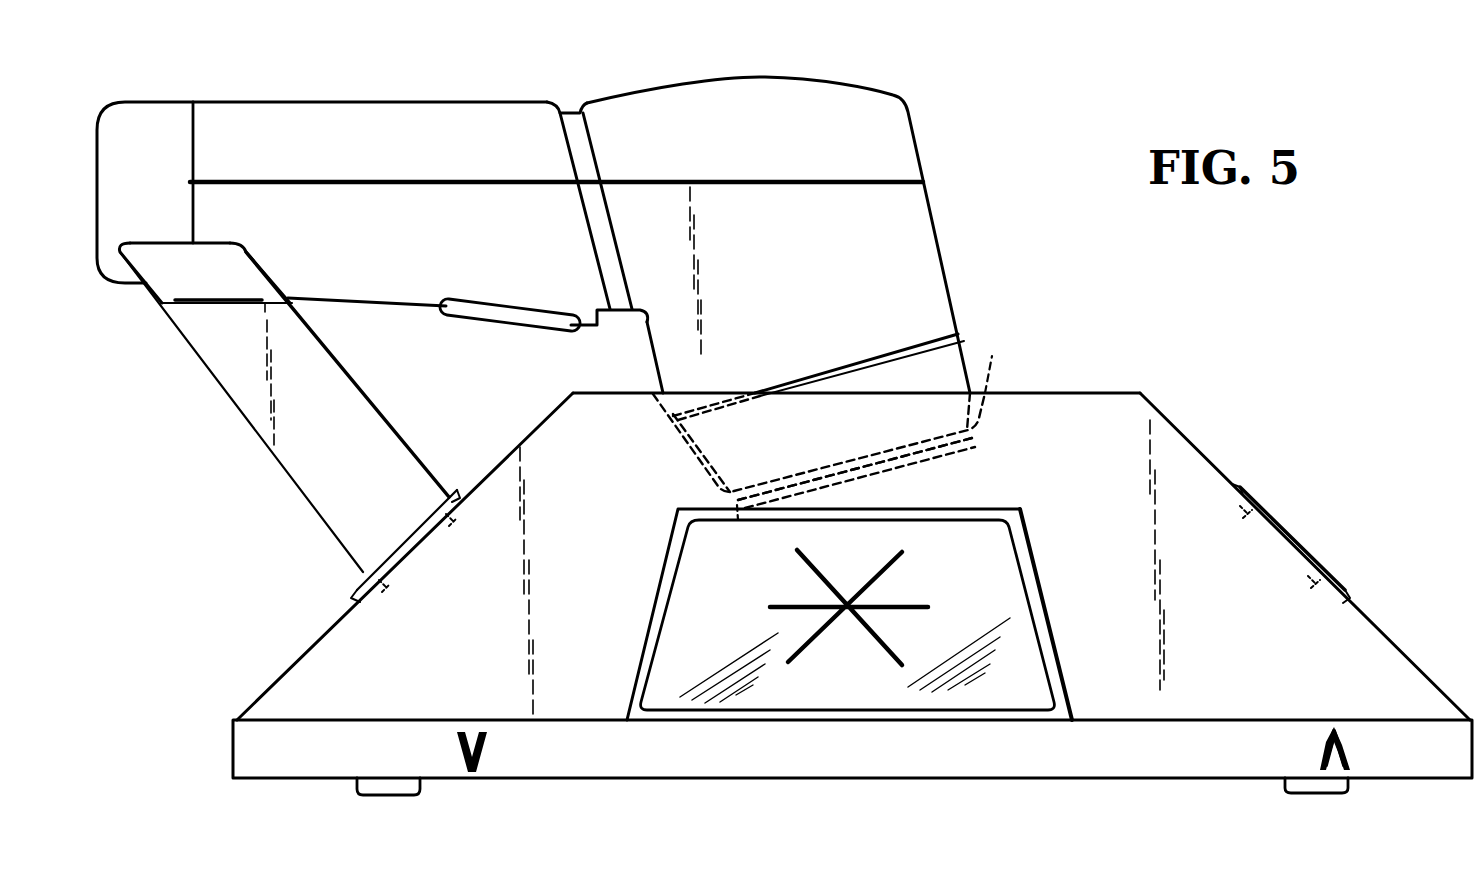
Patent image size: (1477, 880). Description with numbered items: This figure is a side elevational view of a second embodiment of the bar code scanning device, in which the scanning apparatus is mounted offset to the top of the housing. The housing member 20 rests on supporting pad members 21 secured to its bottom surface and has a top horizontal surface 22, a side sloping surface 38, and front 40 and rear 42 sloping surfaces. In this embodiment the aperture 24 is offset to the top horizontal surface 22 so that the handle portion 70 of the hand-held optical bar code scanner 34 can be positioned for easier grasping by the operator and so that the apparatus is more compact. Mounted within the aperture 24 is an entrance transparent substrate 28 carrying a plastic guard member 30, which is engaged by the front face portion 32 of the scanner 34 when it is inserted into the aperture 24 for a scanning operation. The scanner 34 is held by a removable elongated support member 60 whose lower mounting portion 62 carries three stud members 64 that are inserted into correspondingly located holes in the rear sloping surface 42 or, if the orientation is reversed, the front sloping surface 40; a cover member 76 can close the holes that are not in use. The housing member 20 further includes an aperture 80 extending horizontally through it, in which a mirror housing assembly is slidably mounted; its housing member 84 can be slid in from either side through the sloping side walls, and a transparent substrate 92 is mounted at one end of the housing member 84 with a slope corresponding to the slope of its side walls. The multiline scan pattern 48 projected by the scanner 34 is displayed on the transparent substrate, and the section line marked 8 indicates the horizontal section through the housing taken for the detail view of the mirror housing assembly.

The section line 8- 8 is at (843, 303).
The housing member 20 is at (1115, 779).
The supporting pad members 21 is at (1320, 793).
The top horizontal surface 22 is at (1118, 393).
The aperture 24 is at (1012, 363).
The entrance transparent substrate 28 is at (927, 463).
The plastic guard member 30 is at (738, 520).
The front face portion 32 is at (838, 460).
The hand-held optical bar code scanner 34 is at (893, 95).
The side sloping surface 38 is at (1175, 437).
The front sloping surface 40 is at (1222, 470).
The rear sloping surface 42 is at (540, 415).
The multiline scan pattern 48 is at (893, 565).
The removable elongated support member 60 is at (260, 445).
The lower mounting portion 62 is at (355, 585).
The stud members 64 is at (392, 585).
The handle portion 70 is at (170, 102).
The cover member 76 is at (1308, 552).
The aperture 80 is at (1048, 612).
The housing member 84 is at (1020, 553).
The transparent substrate 92 is at (1025, 660).